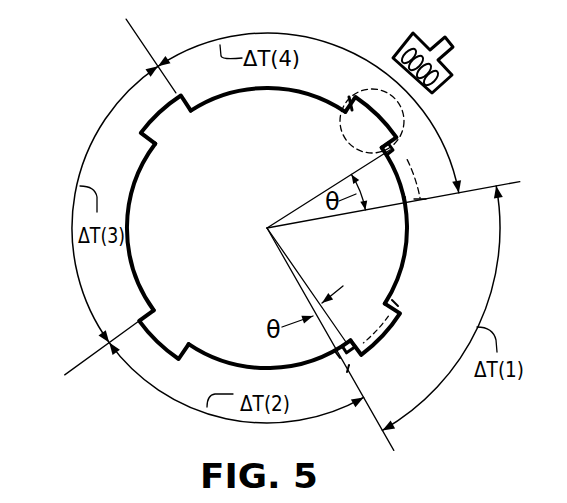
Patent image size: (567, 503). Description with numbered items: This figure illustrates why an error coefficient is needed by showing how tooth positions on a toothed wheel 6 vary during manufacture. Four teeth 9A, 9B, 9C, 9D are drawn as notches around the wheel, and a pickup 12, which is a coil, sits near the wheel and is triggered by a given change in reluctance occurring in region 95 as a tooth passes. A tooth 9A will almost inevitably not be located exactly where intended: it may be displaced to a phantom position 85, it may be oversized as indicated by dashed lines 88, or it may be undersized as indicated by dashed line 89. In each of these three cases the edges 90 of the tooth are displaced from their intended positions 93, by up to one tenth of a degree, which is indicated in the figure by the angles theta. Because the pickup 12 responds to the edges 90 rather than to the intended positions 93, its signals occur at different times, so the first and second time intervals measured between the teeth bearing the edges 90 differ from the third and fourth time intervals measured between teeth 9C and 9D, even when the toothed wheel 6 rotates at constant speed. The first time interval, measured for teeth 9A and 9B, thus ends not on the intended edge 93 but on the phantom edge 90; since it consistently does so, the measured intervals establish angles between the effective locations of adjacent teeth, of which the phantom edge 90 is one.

The toothed wheel 6 is at (267, 228).
The tooth 9A is at (372, 121).
The tooth 9B is at (402, 326).
The tooth 9C is at (164, 334).
The tooth 9D is at (166, 122).
The pickup 12 is at (452, 48).
The phantom position 85 is at (425, 197).
The dashed lines (oversized tooth) 88 is at (396, 304).
The dashed line (undersized tooth) 89 is at (377, 337).
The edges 90 is at (413, 205).
The intended positions 93 is at (393, 151).
The region 95 is at (357, 88).